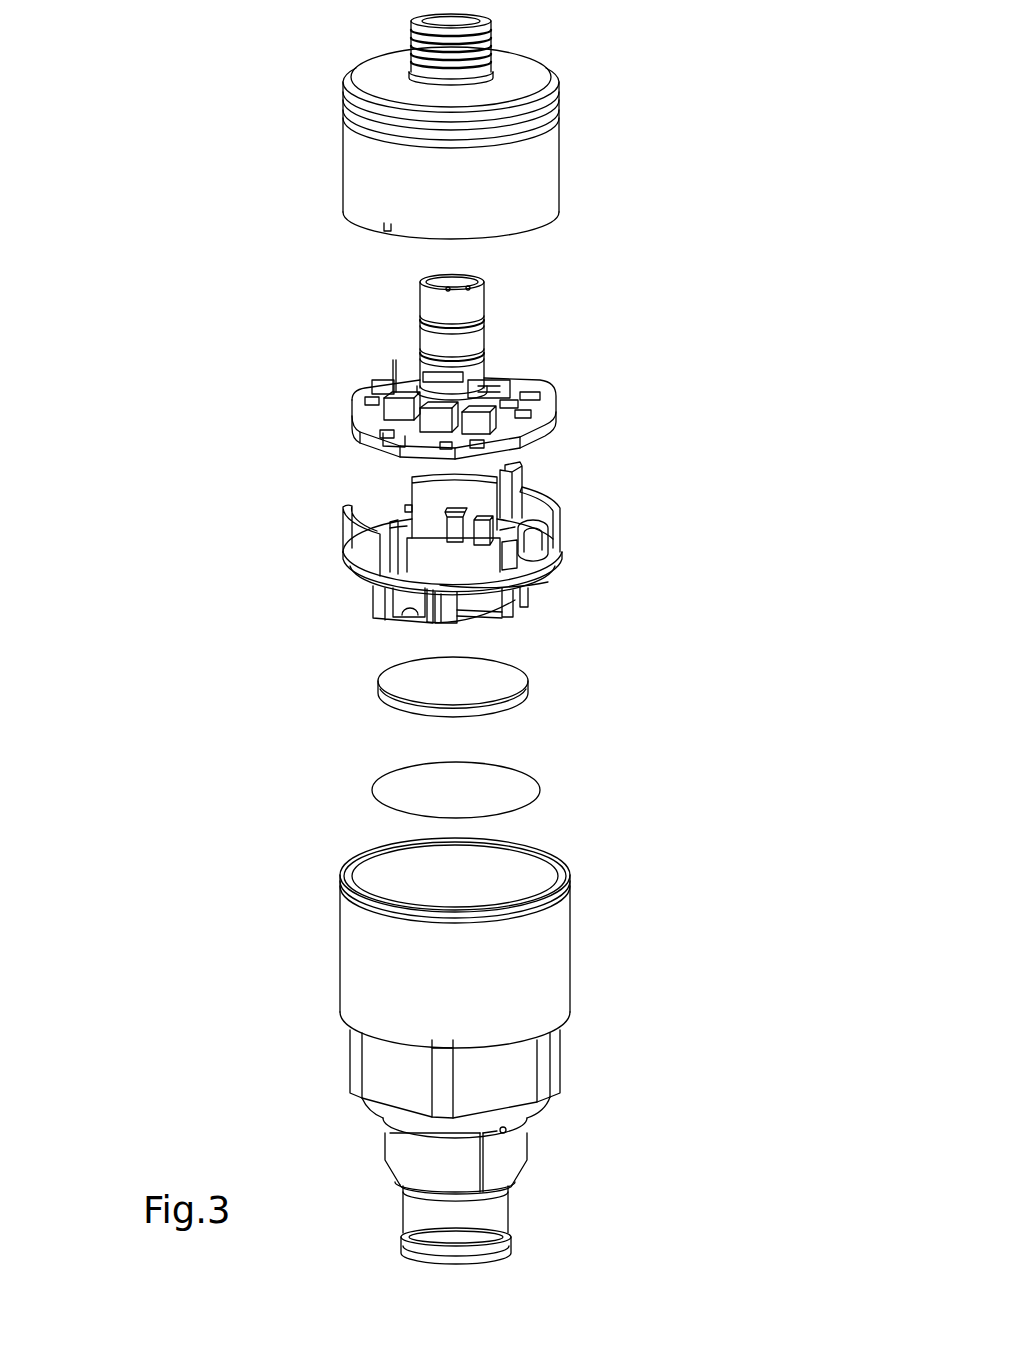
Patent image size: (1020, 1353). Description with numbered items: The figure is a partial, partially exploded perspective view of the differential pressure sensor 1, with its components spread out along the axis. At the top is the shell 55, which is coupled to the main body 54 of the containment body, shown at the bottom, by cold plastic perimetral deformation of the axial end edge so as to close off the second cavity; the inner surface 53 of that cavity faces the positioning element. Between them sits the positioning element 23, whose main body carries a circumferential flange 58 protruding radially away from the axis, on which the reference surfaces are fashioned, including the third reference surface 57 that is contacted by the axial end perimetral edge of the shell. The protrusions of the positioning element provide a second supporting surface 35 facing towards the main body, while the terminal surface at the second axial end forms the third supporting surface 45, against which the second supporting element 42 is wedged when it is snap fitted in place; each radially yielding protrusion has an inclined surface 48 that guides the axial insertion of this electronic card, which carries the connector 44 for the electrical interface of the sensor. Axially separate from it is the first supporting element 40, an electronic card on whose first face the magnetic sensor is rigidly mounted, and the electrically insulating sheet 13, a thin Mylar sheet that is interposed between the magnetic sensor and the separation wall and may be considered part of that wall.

The differential pressure sensor 1 is at (236, 215).
The electrically insulating sheet 13 is at (425, 792).
The positioning element 23 is at (336, 502).
The second supporting surface 35 is at (395, 608).
The first supporting element 40 is at (485, 683).
The second supporting element 42 is at (545, 396).
The connector 44 is at (433, 307).
The third supporting surface 45 is at (551, 489).
The inclined surface 48 is at (524, 462).
The inner surface 53 is at (497, 881).
The main body 54 is at (595, 1054).
The shell 55 is at (586, 140).
The third reference surface 57 is at (548, 562).
The circumferential flange 58 is at (548, 582).